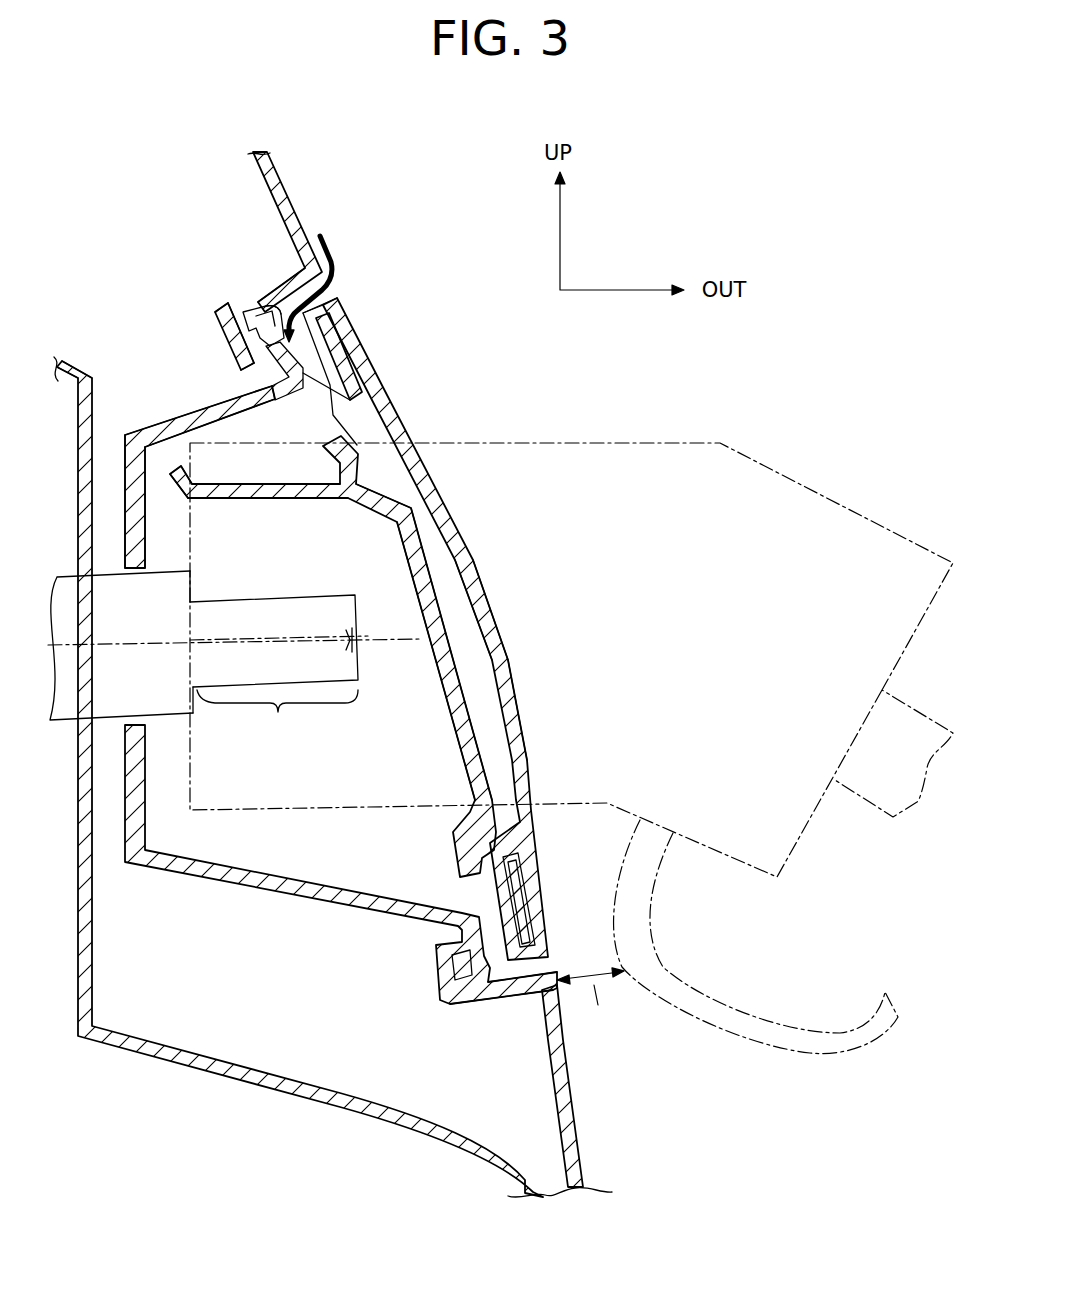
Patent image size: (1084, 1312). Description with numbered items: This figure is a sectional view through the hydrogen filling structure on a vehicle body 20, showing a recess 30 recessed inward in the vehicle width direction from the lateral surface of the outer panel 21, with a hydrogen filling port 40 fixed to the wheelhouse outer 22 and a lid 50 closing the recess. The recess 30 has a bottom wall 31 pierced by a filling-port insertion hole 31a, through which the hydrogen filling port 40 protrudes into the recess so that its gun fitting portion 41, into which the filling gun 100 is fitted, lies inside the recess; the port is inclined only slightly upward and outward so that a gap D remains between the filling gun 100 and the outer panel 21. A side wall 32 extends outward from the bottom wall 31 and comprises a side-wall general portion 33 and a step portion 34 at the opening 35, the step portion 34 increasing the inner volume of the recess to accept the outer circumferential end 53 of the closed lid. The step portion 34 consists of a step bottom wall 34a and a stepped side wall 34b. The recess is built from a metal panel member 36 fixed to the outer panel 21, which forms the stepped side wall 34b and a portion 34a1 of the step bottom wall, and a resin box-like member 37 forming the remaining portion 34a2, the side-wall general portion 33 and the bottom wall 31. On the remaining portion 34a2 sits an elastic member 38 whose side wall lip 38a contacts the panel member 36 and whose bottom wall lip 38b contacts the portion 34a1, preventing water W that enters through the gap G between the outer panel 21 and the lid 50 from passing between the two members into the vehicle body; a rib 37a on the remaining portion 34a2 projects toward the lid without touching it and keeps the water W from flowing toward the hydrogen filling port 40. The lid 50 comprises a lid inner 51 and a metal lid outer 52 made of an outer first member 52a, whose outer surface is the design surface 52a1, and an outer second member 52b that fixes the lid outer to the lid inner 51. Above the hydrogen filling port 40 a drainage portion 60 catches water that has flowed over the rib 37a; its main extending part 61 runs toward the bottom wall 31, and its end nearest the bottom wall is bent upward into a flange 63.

The vehicle body 20 is at (586, 1085).
The outer panel 21 is at (273, 172).
The wheelhouse outer 22 is at (147, 1045).
The recess 30 is at (343, 658).
The bottom wall 31 is at (133, 830).
The filling-port insertion hole 31a is at (136, 582).
The side wall 32 is at (150, 423).
The side-wall general portion 33 is at (150, 422).
The step portion 34 is at (191, 322).
The step bottom wall 34a is at (213, 328).
The portion of the step bottom wall 34a1 is at (237, 337).
The remaining portion of the step bottom wall 34a2 is at (288, 392).
The stepped side wall 34b is at (240, 310).
The opening 35 is at (557, 973).
The panel member 36 is at (287, 265).
The box-like member 37 is at (177, 422).
The rib 37a is at (320, 353).
The elastic member 38 is at (232, 317).
The side wall lip 38a is at (255, 308).
The bottom wall lip 38b is at (270, 376).
The hydrogen filling port 40 is at (234, 629).
The gun fitting portion 41 is at (279, 668).
The lid 50 is at (455, 629).
The lid inner 51 is at (402, 500).
The lid outer 52 is at (445, 527).
The outer first member 52a is at (527, 730).
The design surface 52a1 is at (503, 647).
The outer second member 52b is at (520, 865).
The outer circumferential end 53 is at (343, 315).
The drainage portion 60 is at (333, 656).
The horizontal wall 61 is at (262, 487).
The flange 63 is at (190, 478).
The filling gun 100 is at (588, 440).
The water W is at (335, 258).
The gap G is at (348, 284).
The gap D is at (590, 1001).